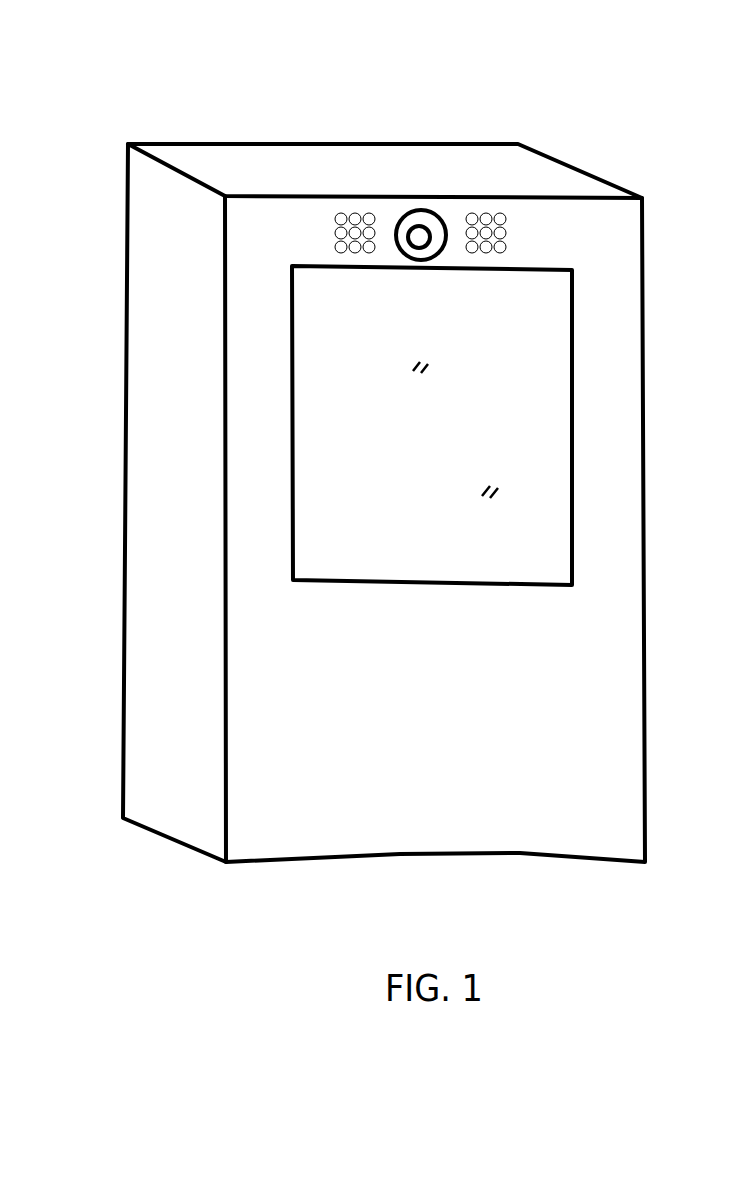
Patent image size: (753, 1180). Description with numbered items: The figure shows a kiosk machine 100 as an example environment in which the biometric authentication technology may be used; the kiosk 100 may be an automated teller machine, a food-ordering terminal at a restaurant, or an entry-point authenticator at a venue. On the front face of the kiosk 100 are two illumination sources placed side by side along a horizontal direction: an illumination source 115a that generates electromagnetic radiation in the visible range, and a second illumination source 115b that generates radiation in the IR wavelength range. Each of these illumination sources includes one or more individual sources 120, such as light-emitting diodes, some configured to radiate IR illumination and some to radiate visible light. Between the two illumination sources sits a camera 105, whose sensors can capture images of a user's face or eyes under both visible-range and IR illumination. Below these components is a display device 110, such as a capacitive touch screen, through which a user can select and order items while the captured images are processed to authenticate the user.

The kiosk machine 100 is at (141, 80).
The camera 105 is at (432, 213).
The display device 110 is at (557, 330).
The illumination source 115a is at (346, 213).
The second illumination source 115b is at (495, 212).
The individual sources 120 is at (500, 247).